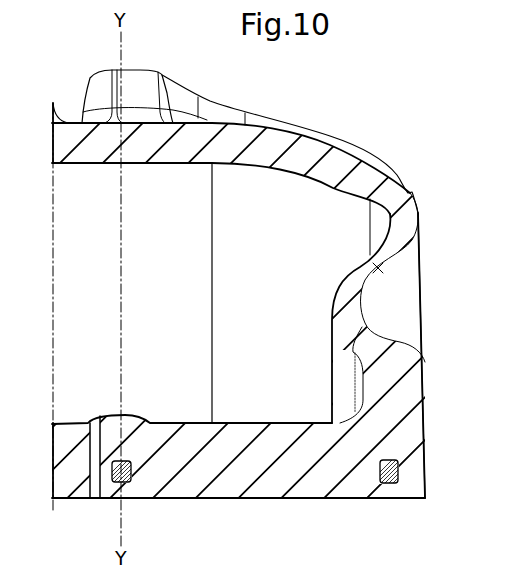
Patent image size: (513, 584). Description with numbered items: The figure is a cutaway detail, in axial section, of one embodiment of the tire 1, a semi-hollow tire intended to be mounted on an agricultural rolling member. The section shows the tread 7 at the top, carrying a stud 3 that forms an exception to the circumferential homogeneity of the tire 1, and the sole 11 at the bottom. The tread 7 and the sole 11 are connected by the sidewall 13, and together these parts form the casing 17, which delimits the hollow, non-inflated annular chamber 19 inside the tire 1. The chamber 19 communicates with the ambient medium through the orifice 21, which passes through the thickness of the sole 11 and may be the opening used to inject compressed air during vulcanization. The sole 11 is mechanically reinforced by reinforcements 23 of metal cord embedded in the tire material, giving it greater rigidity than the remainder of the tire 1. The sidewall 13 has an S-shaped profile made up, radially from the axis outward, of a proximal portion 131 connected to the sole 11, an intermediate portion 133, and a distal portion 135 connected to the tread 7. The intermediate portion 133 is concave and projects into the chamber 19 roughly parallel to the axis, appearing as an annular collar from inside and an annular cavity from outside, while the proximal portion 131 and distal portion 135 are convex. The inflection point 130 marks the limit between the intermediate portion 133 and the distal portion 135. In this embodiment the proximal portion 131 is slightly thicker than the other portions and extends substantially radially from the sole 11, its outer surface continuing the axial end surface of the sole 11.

The tire 1 is at (355, 84).
The stud 3 is at (140, 88).
The tread 7 is at (275, 142).
The sole 11 is at (273, 486).
The sidewall 13 is at (426, 212).
The casing 17 is at (406, 430).
The chamber 19 is at (182, 251).
The orifice 21 is at (100, 468).
The reinforcements 23 is at (120, 471).
The inflection point 130 is at (372, 268).
The proximal portion 131 is at (380, 379).
The intermediate portion 133 is at (350, 317).
The distal portion 135 is at (400, 213).